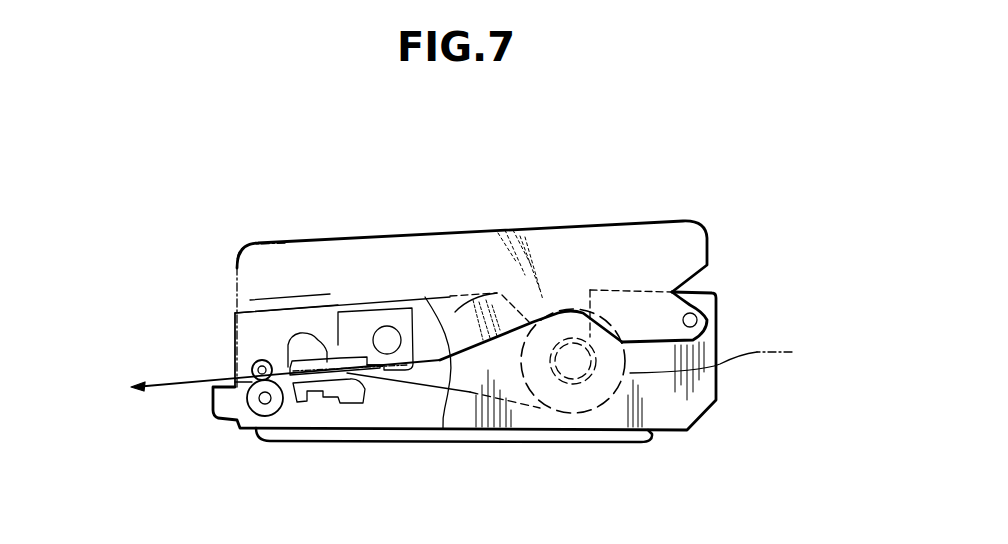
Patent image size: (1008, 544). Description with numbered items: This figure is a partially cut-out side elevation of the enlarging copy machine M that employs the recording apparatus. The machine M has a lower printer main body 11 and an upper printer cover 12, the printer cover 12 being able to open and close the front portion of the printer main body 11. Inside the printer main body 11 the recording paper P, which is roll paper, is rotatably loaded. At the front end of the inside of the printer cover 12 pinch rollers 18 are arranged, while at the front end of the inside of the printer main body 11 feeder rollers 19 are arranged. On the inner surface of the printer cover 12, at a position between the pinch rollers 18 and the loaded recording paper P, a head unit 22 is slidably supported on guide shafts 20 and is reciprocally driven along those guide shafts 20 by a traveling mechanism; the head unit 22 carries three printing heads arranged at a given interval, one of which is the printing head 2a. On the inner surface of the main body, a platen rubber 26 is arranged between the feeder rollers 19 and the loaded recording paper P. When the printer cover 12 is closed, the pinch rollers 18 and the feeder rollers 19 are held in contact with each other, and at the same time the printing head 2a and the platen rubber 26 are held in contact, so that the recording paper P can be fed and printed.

The printer main body 11 is at (703, 420).
The printer cover 12 is at (592, 220).
The pinch rollers 18 is at (258, 305).
The feeder rollers 19 is at (240, 428).
The guide shafts 20 is at (387, 326).
The head unit 22 is at (286, 317).
The platen rubber 26 is at (323, 405).
The printing head 2a is at (323, 365).
The recording paper P is at (170, 381).
The enlarging copy machine M is at (690, 174).